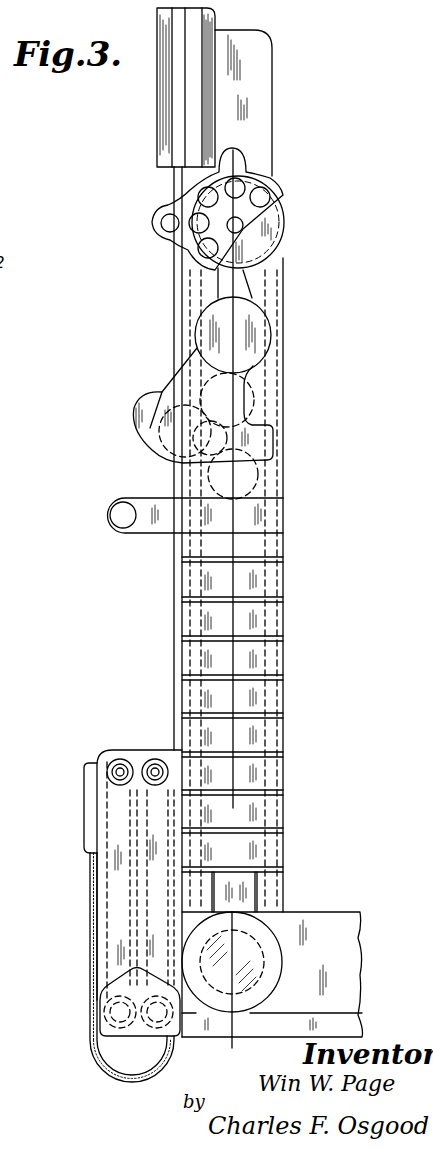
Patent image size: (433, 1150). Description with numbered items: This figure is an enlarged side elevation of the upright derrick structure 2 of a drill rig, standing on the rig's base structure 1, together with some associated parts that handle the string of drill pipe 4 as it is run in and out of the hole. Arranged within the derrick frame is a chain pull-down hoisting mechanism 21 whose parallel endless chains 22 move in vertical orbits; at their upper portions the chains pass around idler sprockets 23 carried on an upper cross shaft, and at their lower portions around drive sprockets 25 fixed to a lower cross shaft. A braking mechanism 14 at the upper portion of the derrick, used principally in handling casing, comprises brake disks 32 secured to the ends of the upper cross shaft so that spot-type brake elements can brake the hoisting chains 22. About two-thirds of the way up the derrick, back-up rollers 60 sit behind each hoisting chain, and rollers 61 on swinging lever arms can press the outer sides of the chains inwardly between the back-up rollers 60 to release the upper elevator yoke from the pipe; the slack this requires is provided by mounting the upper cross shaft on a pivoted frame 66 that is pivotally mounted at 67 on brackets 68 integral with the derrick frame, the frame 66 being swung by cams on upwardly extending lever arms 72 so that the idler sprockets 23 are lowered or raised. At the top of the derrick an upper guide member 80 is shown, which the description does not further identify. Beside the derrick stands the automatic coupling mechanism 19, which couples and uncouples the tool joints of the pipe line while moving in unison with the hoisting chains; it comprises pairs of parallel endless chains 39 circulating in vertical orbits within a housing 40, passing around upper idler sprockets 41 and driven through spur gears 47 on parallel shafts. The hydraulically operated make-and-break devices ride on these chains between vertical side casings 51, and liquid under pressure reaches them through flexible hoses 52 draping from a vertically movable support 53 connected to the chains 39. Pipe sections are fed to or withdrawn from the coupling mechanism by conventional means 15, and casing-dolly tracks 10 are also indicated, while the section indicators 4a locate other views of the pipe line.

The base structure 1 is at (352, 943).
The upright derrick structure 2 is at (286, 466).
The string of drill pipe 4 is at (233, 105).
The section line 4a is at (232, 1048).
The casing-dolly tracks 10 is at (333, 555).
The braking mechanism 14 is at (284, 242).
The pipe feeding means 15 is at (110, 503).
The automatic coupling mechanism 19 is at (103, 757).
The hoisting mechanism 21 is at (272, 710).
The endless chains 22 is at (275, 668).
The idler sprockets 23 is at (262, 266).
The drive sprockets 25 is at (278, 930).
The brake disks 32 is at (270, 225).
The parallel endless chains 39 is at (140, 912).
The housing 40 is at (97, 886).
The upper idler sprockets 41 is at (150, 758).
The spur gears 47 is at (140, 1038).
The side casings 51 is at (108, 862).
The flexible hoses 52 is at (100, 1060).
The vertically movable support 53 is at (84, 797).
The back-up rollers 60 is at (258, 396).
The rollers 61 is at (180, 462).
The pivoted frame 66 is at (255, 183).
The pivot 67 is at (162, 228).
The brackets 68 is at (177, 247).
The lever arms 72 is at (218, 285).
The guide bar 80 is at (212, 25).